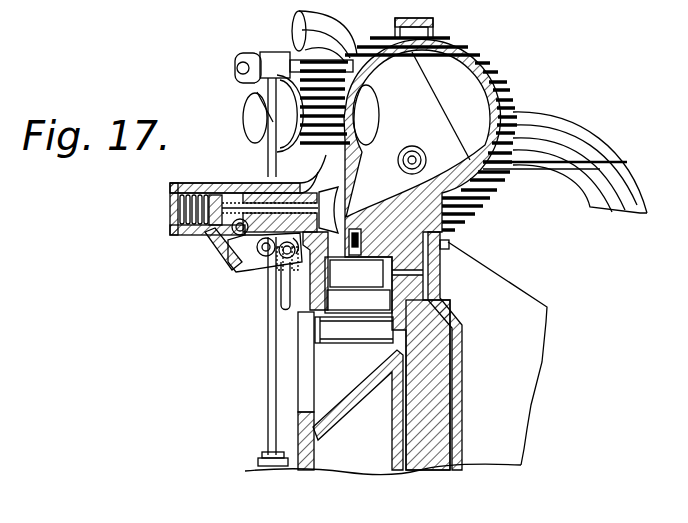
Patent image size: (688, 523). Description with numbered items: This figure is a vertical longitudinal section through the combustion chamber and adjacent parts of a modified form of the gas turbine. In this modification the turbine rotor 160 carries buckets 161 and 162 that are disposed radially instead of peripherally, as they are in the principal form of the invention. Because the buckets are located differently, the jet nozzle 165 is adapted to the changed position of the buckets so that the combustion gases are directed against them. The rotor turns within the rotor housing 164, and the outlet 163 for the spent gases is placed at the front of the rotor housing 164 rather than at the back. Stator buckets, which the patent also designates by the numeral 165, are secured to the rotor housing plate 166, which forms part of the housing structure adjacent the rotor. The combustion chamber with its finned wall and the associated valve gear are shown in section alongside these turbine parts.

The turbine rotor 160 is at (436, 377).
The bucket 161 is at (352, 290).
The bucket 162 is at (372, 337).
The outlet 163 is at (303, 372).
The rotor housing 164 is at (462, 434).
The jet nozzle 165 is at (363, 228).
The rotor housing plate 166 is at (302, 289).